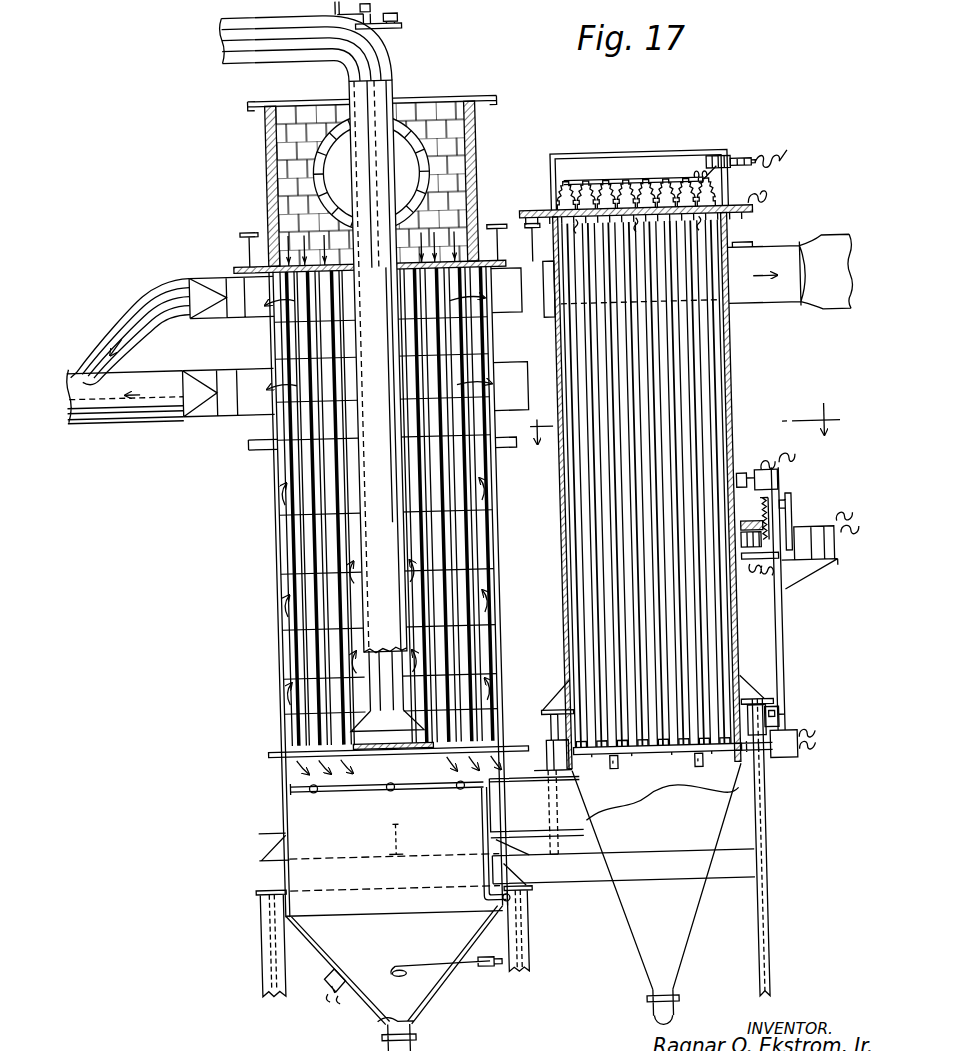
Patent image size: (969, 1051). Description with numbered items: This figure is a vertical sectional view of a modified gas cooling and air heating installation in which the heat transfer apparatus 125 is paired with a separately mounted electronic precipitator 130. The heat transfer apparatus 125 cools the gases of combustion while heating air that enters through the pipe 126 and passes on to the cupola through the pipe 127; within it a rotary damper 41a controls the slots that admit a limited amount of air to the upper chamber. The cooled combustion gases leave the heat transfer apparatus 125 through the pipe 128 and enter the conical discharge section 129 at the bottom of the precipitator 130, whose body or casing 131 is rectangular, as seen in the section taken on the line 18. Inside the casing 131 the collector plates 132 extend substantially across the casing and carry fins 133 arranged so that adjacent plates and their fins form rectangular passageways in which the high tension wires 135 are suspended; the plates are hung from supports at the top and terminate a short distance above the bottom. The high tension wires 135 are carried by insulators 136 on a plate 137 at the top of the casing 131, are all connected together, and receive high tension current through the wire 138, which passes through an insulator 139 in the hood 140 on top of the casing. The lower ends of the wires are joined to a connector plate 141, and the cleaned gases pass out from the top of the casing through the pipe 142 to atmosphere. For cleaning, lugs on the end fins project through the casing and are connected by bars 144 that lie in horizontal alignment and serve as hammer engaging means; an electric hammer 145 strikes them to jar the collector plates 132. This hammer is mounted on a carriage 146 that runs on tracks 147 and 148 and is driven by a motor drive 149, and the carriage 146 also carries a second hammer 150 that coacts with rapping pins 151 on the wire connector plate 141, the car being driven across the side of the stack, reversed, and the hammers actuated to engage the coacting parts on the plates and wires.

The heat transfer apparatus 125 is at (275, 550).
The air inlet pipe 126 is at (259, 58).
The cupola air pipe 127 is at (85, 412).
The gas pipe 128 is at (534, 826).
The conical discharge section 129 is at (627, 921).
The electronic precipitator 130 is at (740, 343).
The casing 131 is at (561, 540).
The collector plates 132 is at (702, 386).
The fins 133 is at (688, 417).
The high tension wires 135 is at (701, 446).
The insulators 136 is at (569, 196).
The plate 137 is at (745, 219).
The wire 138 is at (757, 164).
The insulator 139 is at (741, 163).
The hood 140 is at (591, 156).
The wire connector plate 141 is at (644, 757).
The discharge pipe 142 is at (777, 262).
The bars 144 is at (744, 479).
The electric hammer 145 is at (780, 486).
The carriage 146 is at (781, 628).
The track 147 is at (764, 528).
The track 148 is at (768, 714).
The motor drive 149 is at (818, 535).
The second hammer 150 is at (778, 762).
The rapping pins 151 is at (756, 768).
The rotary damper 41a is at (404, 270).
The section line 18- 18 is at (688, 413).